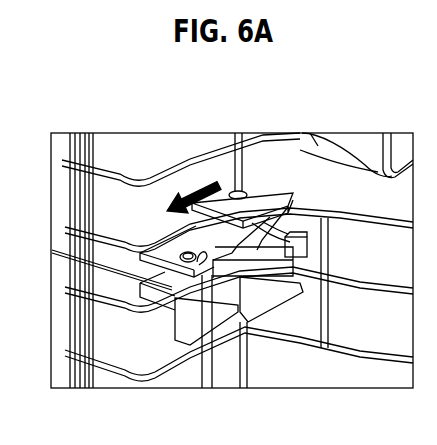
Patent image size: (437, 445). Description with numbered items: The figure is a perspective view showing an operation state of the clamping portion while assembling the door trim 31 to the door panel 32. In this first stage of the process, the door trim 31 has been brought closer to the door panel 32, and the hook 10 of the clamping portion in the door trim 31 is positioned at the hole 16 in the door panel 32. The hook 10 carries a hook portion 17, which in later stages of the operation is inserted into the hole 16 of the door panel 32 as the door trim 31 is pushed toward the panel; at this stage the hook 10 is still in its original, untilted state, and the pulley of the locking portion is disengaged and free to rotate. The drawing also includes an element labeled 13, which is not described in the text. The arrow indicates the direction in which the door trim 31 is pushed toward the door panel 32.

The hook 10 is at (258, 244).
The support rod 13 is at (240, 165).
The hole 16 is at (187, 352).
The hook portion 17 is at (232, 300).
The door trim 31 is at (112, 152).
The door panel 32 is at (62, 268).